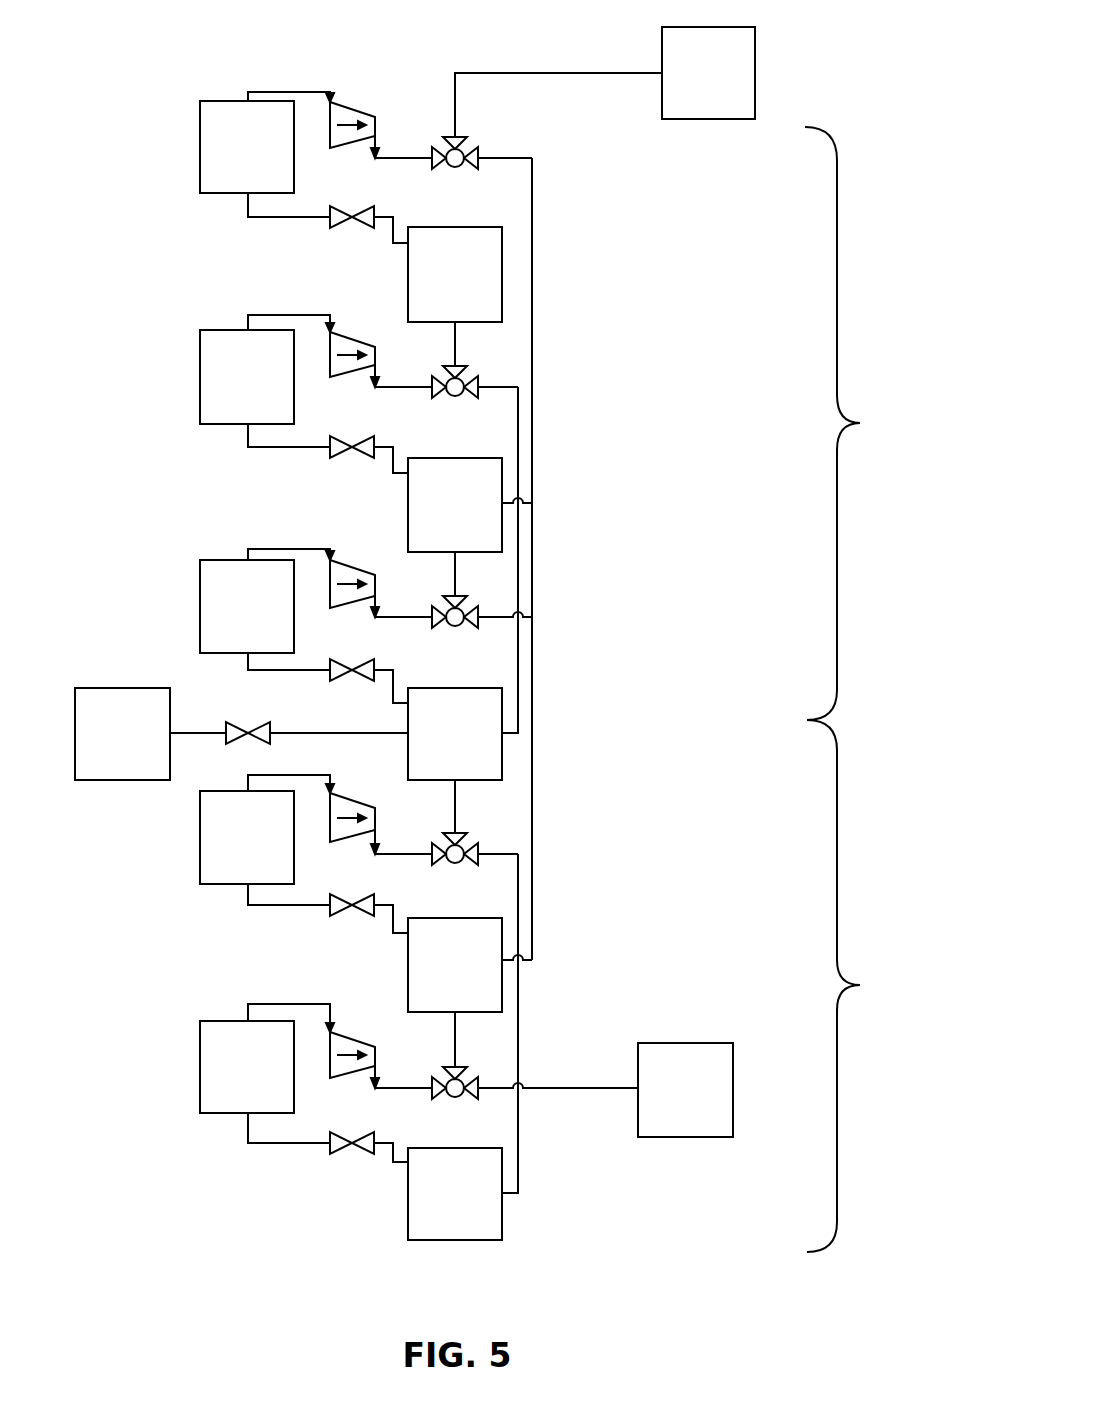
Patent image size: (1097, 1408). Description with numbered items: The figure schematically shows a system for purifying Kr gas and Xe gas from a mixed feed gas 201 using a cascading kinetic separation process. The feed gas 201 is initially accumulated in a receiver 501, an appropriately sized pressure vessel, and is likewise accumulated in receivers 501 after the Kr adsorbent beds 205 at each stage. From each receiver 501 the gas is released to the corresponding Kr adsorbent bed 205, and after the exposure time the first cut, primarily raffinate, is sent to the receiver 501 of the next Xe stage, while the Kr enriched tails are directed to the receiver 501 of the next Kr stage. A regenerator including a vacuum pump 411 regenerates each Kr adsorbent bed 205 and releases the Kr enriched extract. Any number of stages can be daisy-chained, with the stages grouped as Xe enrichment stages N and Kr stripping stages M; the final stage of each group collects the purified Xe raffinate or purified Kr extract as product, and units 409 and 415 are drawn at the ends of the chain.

The feed gas 201 is at (108, 688).
The Kr adsorbent bed 205 is at (223, 156).
The vacuum pump 411 is at (353, 104).
The receiver 501 is at (431, 285).
The controller/consumer unit 409 is at (727, 27).
The outlet unit 415 is at (683, 1043).
The Xe stages N is at (860, 423).
The Kr stages M is at (860, 985).